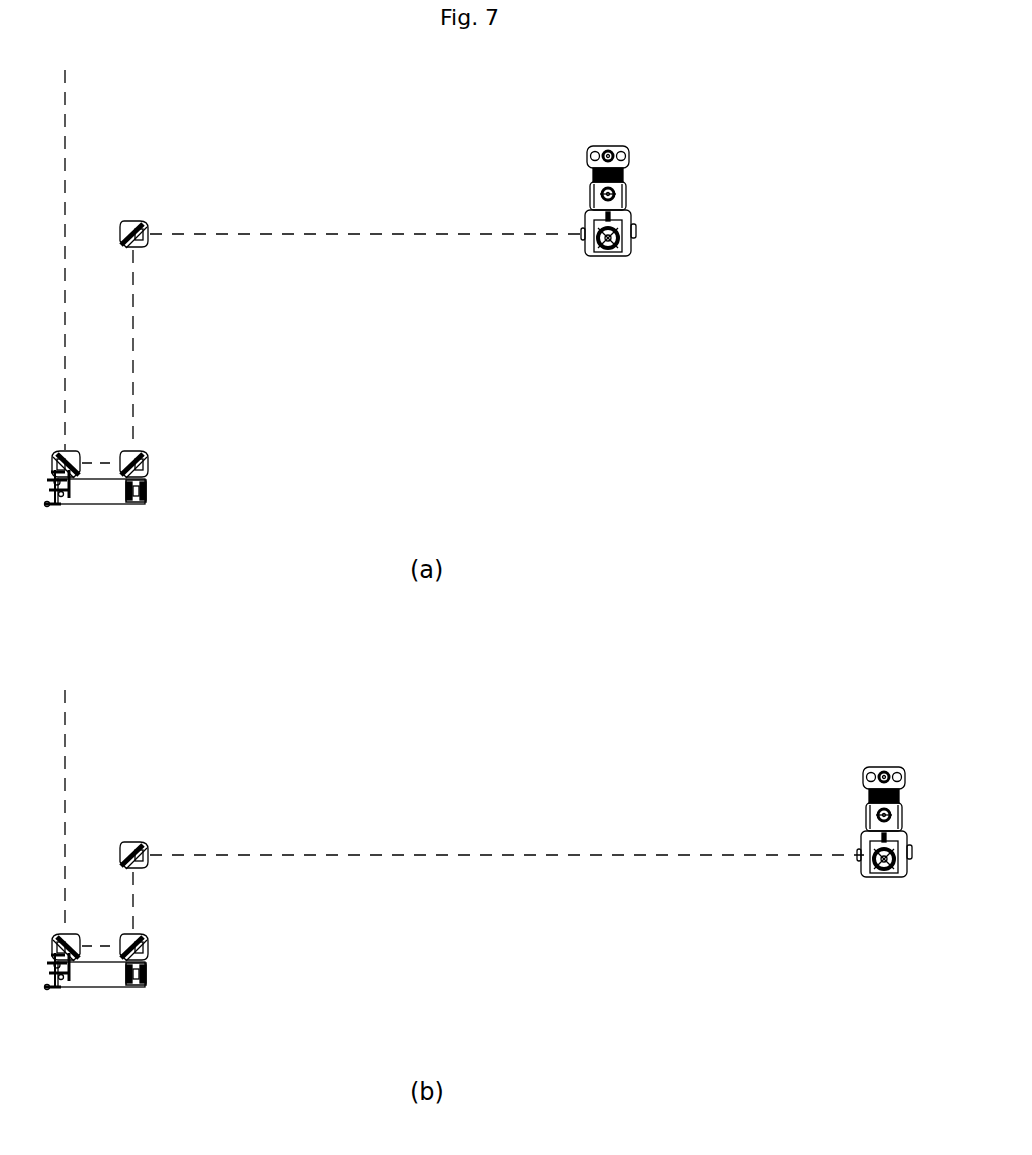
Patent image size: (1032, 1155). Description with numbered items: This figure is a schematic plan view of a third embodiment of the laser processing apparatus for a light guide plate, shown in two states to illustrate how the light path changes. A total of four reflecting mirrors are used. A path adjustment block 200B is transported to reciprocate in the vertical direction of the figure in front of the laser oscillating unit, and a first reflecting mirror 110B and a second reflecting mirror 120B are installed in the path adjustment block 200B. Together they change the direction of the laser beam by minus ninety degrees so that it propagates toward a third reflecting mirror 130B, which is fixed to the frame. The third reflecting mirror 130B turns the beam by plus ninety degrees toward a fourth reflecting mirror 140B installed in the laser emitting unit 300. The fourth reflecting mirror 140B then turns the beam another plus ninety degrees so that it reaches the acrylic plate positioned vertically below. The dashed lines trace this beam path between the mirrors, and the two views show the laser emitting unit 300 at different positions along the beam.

The first reflecting mirror 110B is at (63, 455).
The second reflecting mirror 120B is at (136, 451).
The third reflecting mirror 130B is at (133, 222).
The fourth reflecting mirror 140B is at (594, 252).
The path adjustment block 200B is at (98, 506).
The laser emitting unit 300 is at (624, 174).